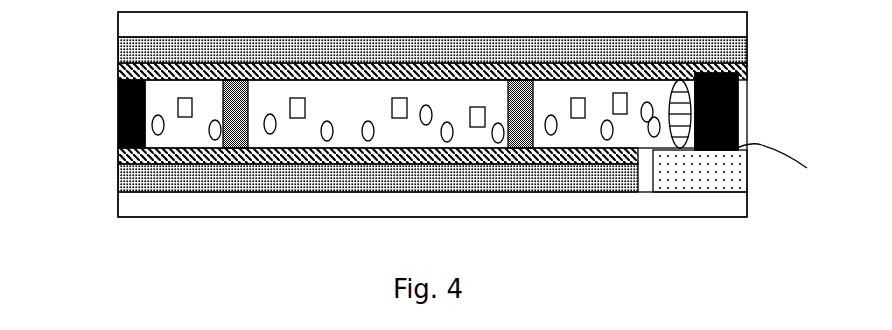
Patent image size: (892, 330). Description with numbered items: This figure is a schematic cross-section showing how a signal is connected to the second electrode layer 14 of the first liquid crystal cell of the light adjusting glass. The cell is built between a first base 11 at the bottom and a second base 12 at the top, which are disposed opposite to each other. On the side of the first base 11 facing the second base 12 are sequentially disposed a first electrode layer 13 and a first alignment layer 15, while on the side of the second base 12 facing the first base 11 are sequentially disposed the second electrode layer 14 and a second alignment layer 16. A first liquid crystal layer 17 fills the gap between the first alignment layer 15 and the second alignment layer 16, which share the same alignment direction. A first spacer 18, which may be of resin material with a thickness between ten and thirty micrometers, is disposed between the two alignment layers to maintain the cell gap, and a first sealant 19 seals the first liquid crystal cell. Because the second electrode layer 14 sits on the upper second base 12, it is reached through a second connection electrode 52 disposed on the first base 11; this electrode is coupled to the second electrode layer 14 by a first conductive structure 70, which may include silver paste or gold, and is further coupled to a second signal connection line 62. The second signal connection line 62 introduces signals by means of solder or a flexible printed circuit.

The first base 11 is at (155, 210).
The second base 12 is at (688, 22).
The first electrode layer 13 is at (155, 184).
The second electrode layer 14 is at (688, 43).
The first alignment layer 15 is at (155, 158).
The second alignment layer 16 is at (688, 70).
The first liquid crystal layer 17 is at (613, 126).
The first spacer 18 is at (223, 112).
The first sealant 19 is at (738, 96).
The second connection electrode 52 is at (715, 173).
The second signal connection line 62 is at (807, 168).
The first conductive structure 70 is at (680, 80).